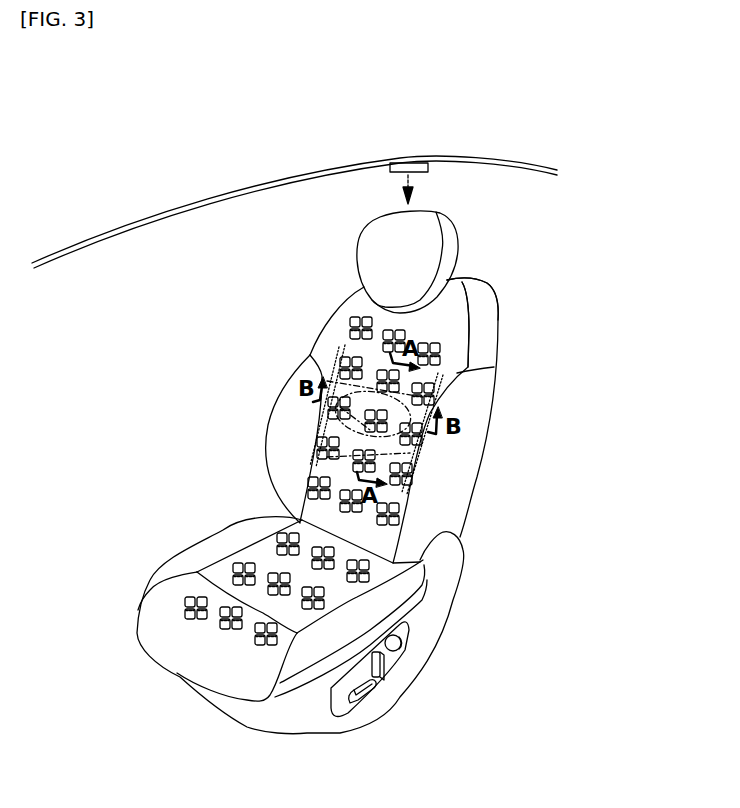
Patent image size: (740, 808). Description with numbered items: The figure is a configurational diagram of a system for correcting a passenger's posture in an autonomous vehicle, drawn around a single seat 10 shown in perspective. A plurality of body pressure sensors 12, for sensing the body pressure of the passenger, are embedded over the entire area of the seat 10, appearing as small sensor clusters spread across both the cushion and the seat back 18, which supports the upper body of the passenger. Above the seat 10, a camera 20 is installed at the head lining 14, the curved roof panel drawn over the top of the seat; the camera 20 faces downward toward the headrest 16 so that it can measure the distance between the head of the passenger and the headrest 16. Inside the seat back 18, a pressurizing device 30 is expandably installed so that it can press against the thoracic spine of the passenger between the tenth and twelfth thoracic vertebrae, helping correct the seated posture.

The seat 10 is at (270, 345).
The body pressure sensors 12 is at (437, 348).
The head lining 14 is at (264, 178).
The headrest 16 is at (448, 241).
The seat back 18 is at (483, 313).
The camera 20 is at (393, 173).
The pressurizing device 30 is at (313, 432).